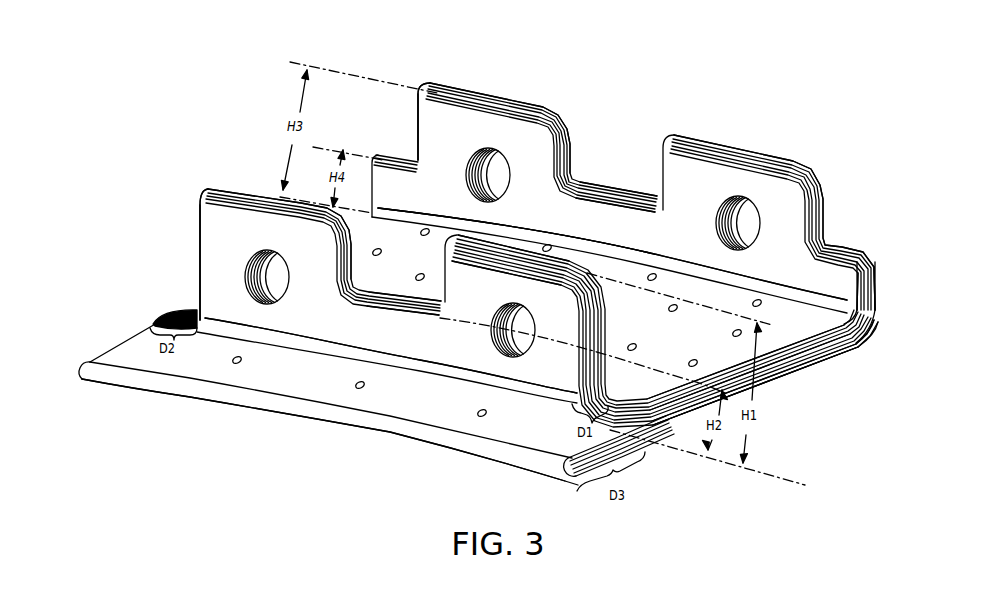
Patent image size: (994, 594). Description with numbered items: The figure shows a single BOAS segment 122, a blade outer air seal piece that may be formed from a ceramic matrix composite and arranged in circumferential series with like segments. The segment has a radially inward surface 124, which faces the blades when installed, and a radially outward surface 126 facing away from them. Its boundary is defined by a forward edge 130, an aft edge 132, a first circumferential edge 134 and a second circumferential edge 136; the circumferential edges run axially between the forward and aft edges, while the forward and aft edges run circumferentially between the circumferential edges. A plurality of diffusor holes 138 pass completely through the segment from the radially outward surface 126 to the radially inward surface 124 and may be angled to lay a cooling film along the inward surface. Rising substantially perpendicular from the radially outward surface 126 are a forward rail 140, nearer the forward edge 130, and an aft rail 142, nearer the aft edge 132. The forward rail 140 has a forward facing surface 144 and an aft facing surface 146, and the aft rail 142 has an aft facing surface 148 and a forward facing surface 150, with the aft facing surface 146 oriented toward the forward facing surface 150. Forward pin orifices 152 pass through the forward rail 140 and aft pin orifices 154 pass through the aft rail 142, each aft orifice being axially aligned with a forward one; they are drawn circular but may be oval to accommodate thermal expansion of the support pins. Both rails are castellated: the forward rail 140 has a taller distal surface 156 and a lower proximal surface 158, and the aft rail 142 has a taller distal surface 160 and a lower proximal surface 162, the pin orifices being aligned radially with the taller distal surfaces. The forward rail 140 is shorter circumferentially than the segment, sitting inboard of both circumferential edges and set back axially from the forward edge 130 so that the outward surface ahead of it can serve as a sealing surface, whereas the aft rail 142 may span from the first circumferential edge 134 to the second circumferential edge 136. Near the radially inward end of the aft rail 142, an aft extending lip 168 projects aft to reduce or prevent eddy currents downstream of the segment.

The BOAS segment 122 is at (75, 82).
The radially inward surface 124 is at (810, 381).
The radially outward surface 126 is at (621, 325).
The forward edge 130 is at (363, 427).
The aft edge 132 is at (890, 320).
The first circumferential edge 134 is at (760, 382).
The second circumferential edge 136 is at (105, 340).
The diffusor holes 138 is at (419, 226).
The forward rail 140 is at (220, 237).
The aft rail 142 is at (427, 117).
The forward facing surface 144 is at (204, 279).
The aft facing surface 146 is at (245, 188).
The aft facing surface 148 is at (537, 98).
The forward facing surface 150 is at (429, 147).
The forward pin orifices 152 is at (272, 281).
The aft pin orifices 154 is at (486, 183).
The distal surface 156 is at (213, 196).
The proximal surface 158 is at (390, 298).
The distal surface 160 is at (470, 93).
The proximal surface 162 is at (615, 193).
The aft extending lip 168 is at (900, 330).